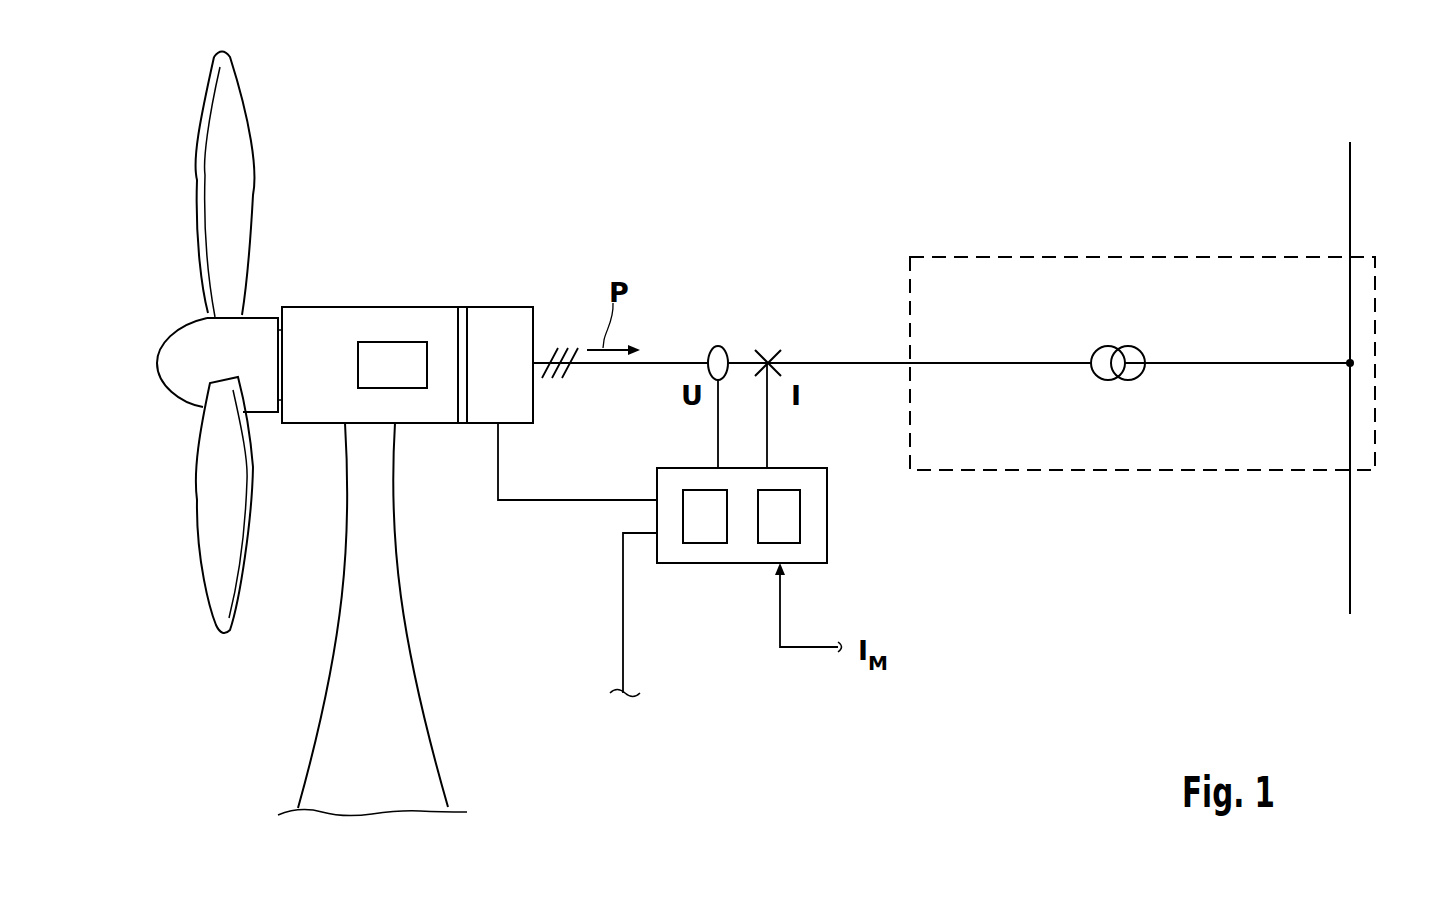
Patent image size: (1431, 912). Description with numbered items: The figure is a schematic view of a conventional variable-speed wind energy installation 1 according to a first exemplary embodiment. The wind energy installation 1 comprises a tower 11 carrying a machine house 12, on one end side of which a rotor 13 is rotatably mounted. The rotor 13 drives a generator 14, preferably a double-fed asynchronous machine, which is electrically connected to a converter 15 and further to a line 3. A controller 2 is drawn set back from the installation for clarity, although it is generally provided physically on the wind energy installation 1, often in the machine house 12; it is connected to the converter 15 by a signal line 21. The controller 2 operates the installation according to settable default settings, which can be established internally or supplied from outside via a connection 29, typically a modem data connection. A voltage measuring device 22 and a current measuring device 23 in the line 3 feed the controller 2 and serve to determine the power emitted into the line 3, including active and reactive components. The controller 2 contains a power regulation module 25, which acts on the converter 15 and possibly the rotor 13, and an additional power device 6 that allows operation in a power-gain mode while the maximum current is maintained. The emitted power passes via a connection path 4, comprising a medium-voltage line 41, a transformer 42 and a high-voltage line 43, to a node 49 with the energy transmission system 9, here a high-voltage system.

The wind energy installation 1 is at (258, 705).
The controller 2 is at (680, 565).
The line 3 is at (662, 362).
The connection path 4 is at (997, 255).
The additional power device 6 is at (793, 520).
The energy transmission system 9 is at (1351, 560).
The tower 11 is at (405, 693).
The machine house 12 is at (320, 313).
The rotor 13 is at (218, 118).
The generator 14 is at (403, 347).
The converter 15 is at (495, 315).
The signal line 21 is at (553, 502).
The voltage measuring device 22 is at (718, 345).
The current measuring device 23 is at (768, 357).
The power regulation module 25 is at (707, 535).
The connection 29 is at (623, 628).
The medium-voltage line 41 is at (1035, 367).
The transformer 42 is at (1118, 378).
The high-voltage line 43 is at (1207, 363).
The node 49 is at (1355, 363).